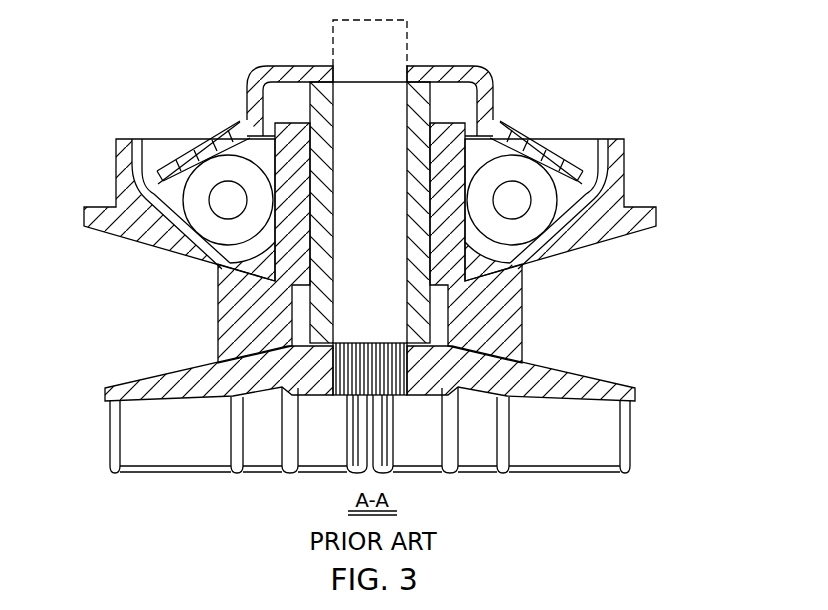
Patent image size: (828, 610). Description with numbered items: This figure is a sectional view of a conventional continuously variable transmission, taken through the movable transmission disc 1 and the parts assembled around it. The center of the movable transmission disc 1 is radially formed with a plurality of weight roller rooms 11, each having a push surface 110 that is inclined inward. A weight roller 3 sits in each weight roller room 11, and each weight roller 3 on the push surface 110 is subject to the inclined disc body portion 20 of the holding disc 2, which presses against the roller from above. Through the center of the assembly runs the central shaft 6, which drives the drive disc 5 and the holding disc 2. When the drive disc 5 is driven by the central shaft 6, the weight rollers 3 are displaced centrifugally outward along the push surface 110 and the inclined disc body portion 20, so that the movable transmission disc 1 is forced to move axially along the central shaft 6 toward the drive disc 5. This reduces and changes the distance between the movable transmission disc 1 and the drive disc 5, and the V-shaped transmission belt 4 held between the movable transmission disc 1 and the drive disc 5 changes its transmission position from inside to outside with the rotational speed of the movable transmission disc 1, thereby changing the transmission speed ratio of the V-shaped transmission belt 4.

The movable transmission disc 1 is at (92, 218).
The holding disc 2 is at (428, 73).
The weight roller 3 is at (530, 208).
The V-shaped transmission belt 4 is at (233, 301).
The drive disc 5 is at (153, 392).
The central shaft 6 is at (332, 33).
The weight roller room 11 is at (562, 210).
The inclined disc body portion 20 is at (531, 142).
The push surface 110 is at (568, 212).